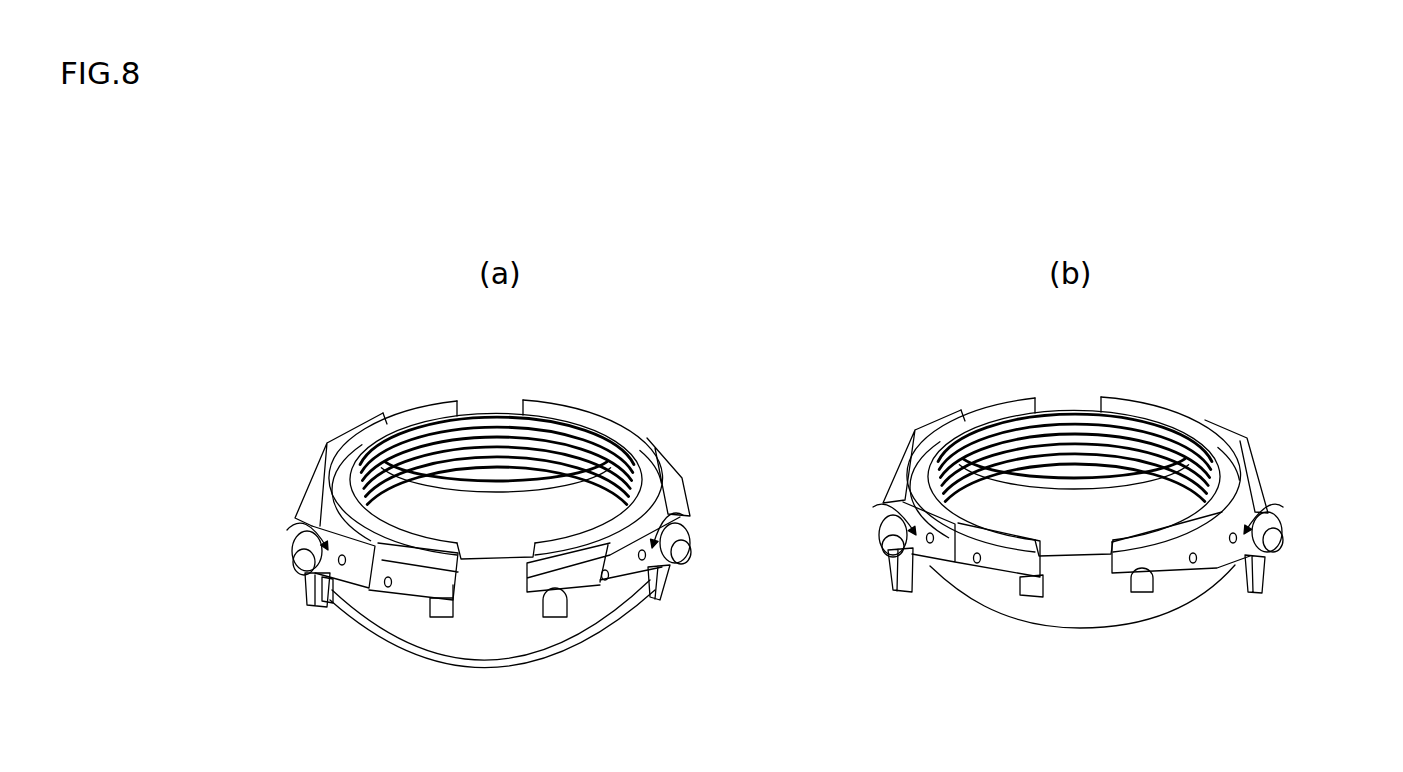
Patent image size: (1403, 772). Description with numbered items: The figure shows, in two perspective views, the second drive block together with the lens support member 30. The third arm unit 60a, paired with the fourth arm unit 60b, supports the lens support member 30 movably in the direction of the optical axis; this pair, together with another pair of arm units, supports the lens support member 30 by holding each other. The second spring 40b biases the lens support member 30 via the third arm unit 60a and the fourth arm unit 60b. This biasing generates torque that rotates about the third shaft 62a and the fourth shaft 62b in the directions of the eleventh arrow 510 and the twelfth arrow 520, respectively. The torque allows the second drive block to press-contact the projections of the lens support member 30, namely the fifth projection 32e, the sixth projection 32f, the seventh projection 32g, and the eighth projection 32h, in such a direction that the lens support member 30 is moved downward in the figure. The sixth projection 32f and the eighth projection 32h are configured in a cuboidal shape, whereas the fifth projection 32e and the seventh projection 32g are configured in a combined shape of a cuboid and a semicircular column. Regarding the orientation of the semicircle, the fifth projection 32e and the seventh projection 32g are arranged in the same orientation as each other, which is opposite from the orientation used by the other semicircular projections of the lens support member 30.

The lens support member 30 is at (548, 445).
The third arm unit 60a is at (658, 498).
The fourth arm unit 60b is at (310, 483).
The eleventh arrow 510 is at (692, 530).
The twelfth arrow 520 is at (292, 540).
The third shaft 62a is at (683, 553).
The fourth shaft 62b is at (313, 587).
The second spring 40b is at (627, 607).
The fifth projection 32e is at (557, 607).
The sixth projection 32f is at (1031, 588).
The seventh projection 32g is at (1140, 588).
The eighth projection 32h is at (430, 610).